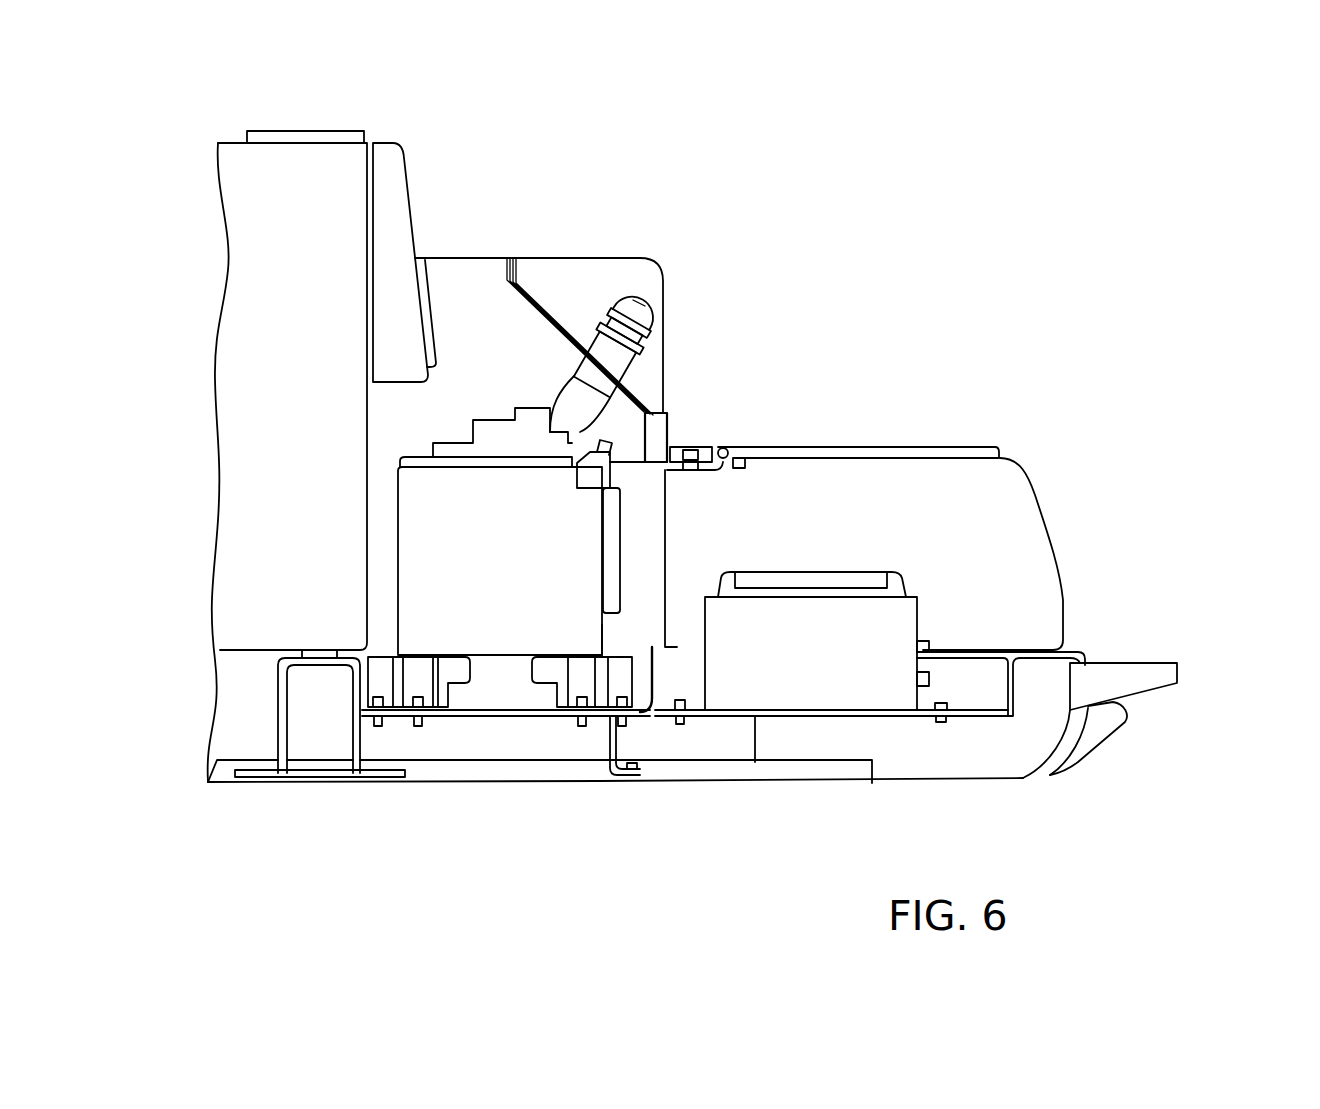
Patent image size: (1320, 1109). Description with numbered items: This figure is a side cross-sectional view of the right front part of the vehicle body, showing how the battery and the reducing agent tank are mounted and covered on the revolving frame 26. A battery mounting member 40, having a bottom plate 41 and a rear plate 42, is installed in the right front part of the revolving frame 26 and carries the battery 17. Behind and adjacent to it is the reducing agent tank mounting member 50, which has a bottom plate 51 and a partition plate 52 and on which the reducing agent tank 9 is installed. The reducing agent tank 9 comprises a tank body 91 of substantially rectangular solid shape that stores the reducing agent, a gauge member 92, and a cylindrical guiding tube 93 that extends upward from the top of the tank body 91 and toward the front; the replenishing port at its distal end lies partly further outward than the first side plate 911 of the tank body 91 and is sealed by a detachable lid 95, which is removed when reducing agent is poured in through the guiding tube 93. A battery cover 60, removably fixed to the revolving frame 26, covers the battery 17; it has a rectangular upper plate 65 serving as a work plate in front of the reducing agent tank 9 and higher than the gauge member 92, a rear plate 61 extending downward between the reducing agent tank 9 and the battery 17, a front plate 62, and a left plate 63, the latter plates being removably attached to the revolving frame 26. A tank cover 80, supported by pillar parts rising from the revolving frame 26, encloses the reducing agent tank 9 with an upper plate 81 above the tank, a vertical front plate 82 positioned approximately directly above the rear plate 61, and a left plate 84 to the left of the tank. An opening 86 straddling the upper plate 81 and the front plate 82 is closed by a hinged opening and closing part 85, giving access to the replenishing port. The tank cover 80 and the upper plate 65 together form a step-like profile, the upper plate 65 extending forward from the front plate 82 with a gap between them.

The reducing agent tank 9 is at (469, 406).
The battery 17 is at (790, 693).
The revolving frame 26 is at (1135, 720).
The battery mounting member 40 is at (690, 722).
The bottom plate 41 is at (710, 717).
The rear plate 42 is at (650, 714).
The reducing agent tank mounting member 50 is at (583, 718).
The bottom plate 51 is at (567, 722).
The partition plate 52 is at (627, 718).
The battery cover 60 is at (908, 481).
The rear plate 61 is at (665, 535).
The front plate 62 is at (1043, 508).
The left plate 63 is at (972, 492).
The upper plate 65 is at (768, 447).
The tank cover 80 is at (569, 300).
The upper plate 81 is at (465, 258).
The front plate 82 is at (672, 427).
The left plate 84 is at (468, 313).
The opening and closing part 85 is at (628, 258).
The opening 86 is at (562, 308).
The tank body 91 is at (410, 518).
The gauge member 92 is at (610, 545).
The guiding tube 93 is at (664, 326).
The lid 95 is at (620, 295).
The first side plate 911 is at (607, 640).